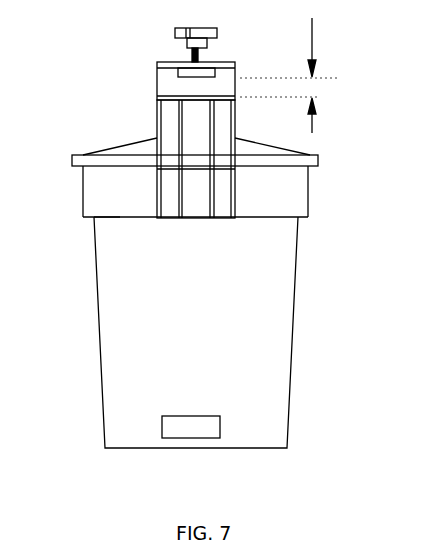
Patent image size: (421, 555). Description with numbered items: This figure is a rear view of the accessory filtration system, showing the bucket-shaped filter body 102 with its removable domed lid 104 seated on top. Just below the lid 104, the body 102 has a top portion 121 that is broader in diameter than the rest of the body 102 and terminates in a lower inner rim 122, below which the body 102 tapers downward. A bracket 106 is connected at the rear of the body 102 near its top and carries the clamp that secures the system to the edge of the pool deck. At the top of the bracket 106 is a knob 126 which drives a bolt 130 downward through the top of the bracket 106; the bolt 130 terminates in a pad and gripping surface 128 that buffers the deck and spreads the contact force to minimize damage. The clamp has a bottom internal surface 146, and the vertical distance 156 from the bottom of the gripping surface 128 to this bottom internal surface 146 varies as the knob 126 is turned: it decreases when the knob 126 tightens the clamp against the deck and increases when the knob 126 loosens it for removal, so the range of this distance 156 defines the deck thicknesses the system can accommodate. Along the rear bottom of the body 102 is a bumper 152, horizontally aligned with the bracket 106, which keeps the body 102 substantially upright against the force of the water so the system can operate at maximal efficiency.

The filter body 102 is at (100, 335).
The lid 104 is at (273, 157).
The bracket 106 is at (157, 183).
The top portion 121 is at (307, 190).
The lower inner rim 122 is at (110, 220).
The knob 126 is at (175, 33).
The pad and gripping surface 128 is at (180, 77).
The bolt 130 is at (199, 57).
The bottom internal surface 146 is at (182, 96).
The bumper 152 is at (212, 428).
The vertical distance 156 is at (312, 40).